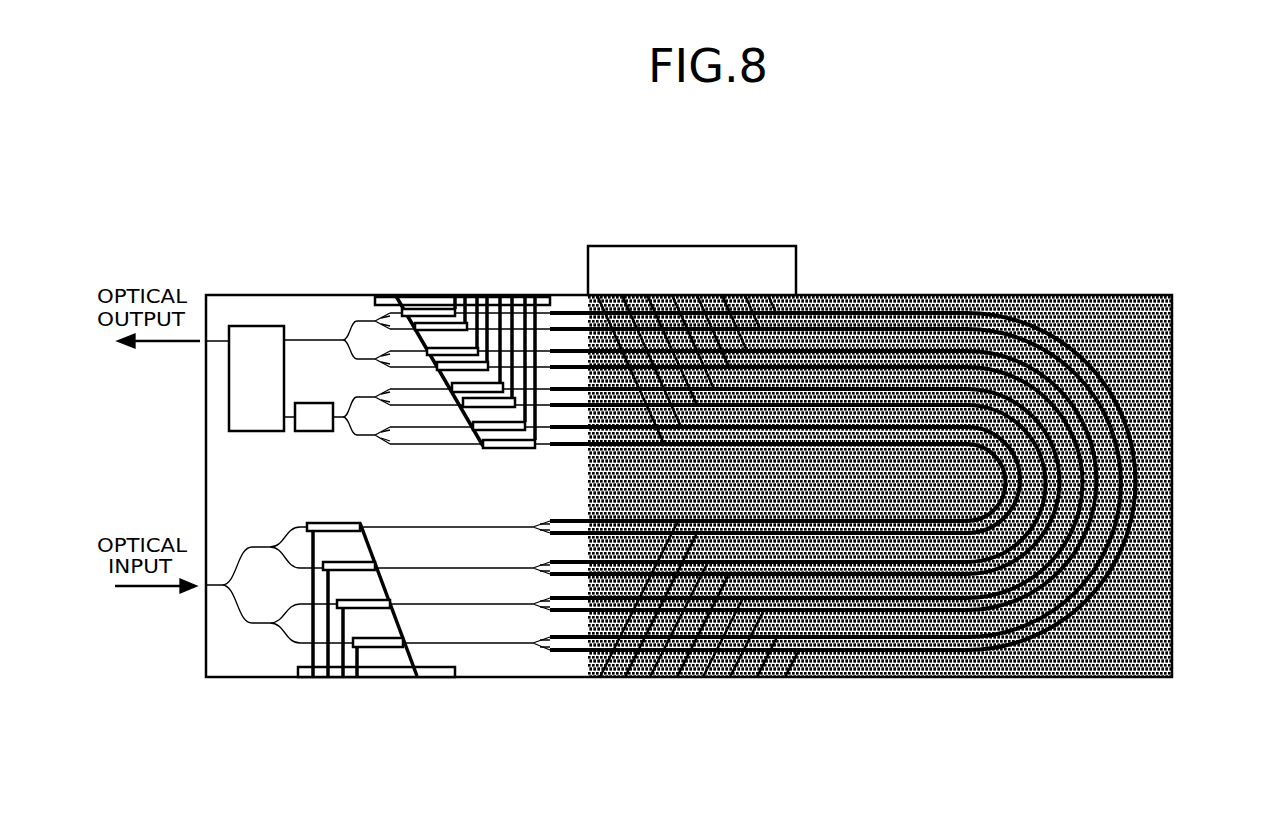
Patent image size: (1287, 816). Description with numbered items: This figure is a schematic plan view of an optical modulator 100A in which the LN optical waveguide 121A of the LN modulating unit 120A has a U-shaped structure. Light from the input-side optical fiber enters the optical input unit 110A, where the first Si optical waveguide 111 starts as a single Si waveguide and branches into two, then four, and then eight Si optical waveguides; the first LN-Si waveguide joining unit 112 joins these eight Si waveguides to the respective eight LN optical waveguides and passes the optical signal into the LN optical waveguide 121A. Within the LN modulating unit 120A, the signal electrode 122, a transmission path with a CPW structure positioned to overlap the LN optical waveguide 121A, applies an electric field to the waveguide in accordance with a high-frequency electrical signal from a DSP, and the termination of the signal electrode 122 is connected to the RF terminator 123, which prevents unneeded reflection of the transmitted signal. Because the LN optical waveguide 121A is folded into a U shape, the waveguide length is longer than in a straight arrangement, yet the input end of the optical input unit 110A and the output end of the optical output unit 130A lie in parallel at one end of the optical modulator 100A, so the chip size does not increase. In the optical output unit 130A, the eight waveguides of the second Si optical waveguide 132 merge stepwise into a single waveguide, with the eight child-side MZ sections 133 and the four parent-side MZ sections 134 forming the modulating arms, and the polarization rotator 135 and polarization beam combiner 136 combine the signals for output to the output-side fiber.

The optical modulator 100A is at (200, 223).
The optical input unit 110A is at (587, 717).
The first Si optical waveguide 111 is at (253, 543).
The first LN-Si waveguide joining unit 112 is at (557, 652).
The LN modulating unit 120A is at (1185, 295).
The LN optical waveguide 121A is at (990, 295).
The signal electrode 122 is at (883, 295).
The RF terminator 123 is at (692, 246).
The optical output unit 130A is at (585, 270).
The second Si optical waveguide 132 is at (368, 437).
The child-side Mach-Zehnder section 133 is at (432, 296).
The parent-side Mach-Zehnder section 134 is at (373, 670).
The polarization rotator 135 is at (313, 403).
The polarization beam combiner 136 is at (255, 326).